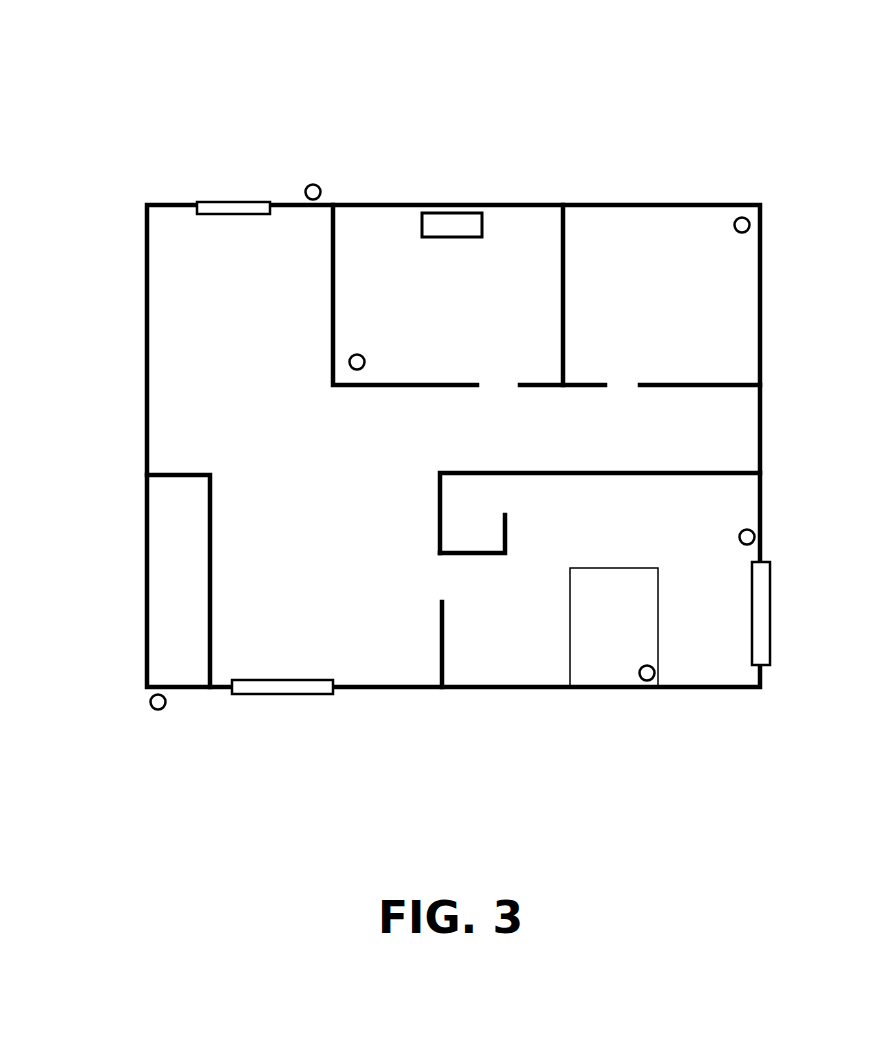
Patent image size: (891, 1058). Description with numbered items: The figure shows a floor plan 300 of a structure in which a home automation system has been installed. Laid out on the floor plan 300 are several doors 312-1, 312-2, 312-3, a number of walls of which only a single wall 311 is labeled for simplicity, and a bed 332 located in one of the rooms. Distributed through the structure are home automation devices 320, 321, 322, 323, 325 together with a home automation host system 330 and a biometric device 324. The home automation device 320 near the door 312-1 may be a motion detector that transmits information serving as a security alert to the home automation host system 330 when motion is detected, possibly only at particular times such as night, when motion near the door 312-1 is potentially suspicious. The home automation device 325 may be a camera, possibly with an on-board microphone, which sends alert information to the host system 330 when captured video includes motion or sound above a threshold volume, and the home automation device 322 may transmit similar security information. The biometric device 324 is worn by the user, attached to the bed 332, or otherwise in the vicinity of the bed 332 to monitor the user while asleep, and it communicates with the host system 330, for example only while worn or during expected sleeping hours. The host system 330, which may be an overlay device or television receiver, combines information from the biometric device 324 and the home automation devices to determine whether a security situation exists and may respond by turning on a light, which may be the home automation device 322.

The floor plan 300 is at (816, 50).
The wall 311 is at (553, 472).
The door 312-1 is at (210, 201).
The door 312-2 is at (794, 611).
The door 312-3 is at (231, 692).
The home automation device 320 is at (309, 184).
The home automation device 321 is at (362, 356).
The home automation device 322 is at (740, 232).
The home automation device 323 is at (743, 544).
The biometric device 324 is at (653, 666).
The home automation device 325 is at (154, 709).
The home automation host system 330 is at (432, 238).
The bed 332 is at (640, 567).